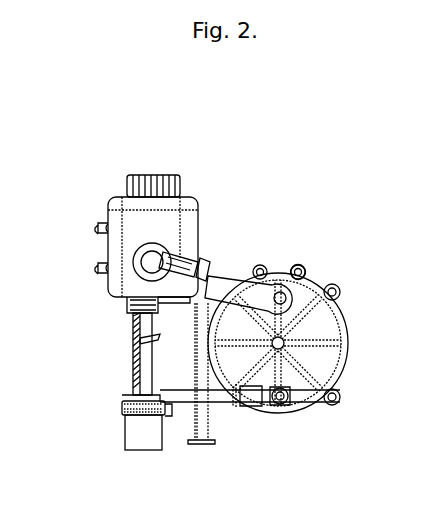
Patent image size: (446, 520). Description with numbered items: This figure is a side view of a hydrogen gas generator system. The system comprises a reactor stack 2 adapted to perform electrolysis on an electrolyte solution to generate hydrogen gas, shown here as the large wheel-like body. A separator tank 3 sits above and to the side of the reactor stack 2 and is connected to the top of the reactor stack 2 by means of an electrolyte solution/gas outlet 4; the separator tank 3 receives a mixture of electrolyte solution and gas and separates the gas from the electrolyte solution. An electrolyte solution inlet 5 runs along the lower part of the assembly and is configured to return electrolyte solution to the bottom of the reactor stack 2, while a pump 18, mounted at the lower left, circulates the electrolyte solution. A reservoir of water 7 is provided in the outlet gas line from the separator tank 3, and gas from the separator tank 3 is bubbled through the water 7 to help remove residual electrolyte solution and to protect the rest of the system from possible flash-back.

The reactor stack 2 is at (318, 328).
The separator tank 3 is at (163, 222).
The electrolyte solution/gas outlet 4 is at (300, 268).
The electrolyte solution inlet 5 is at (300, 417).
The reservoir of water 7 is at (187, 328).
The pump 18 is at (137, 431).